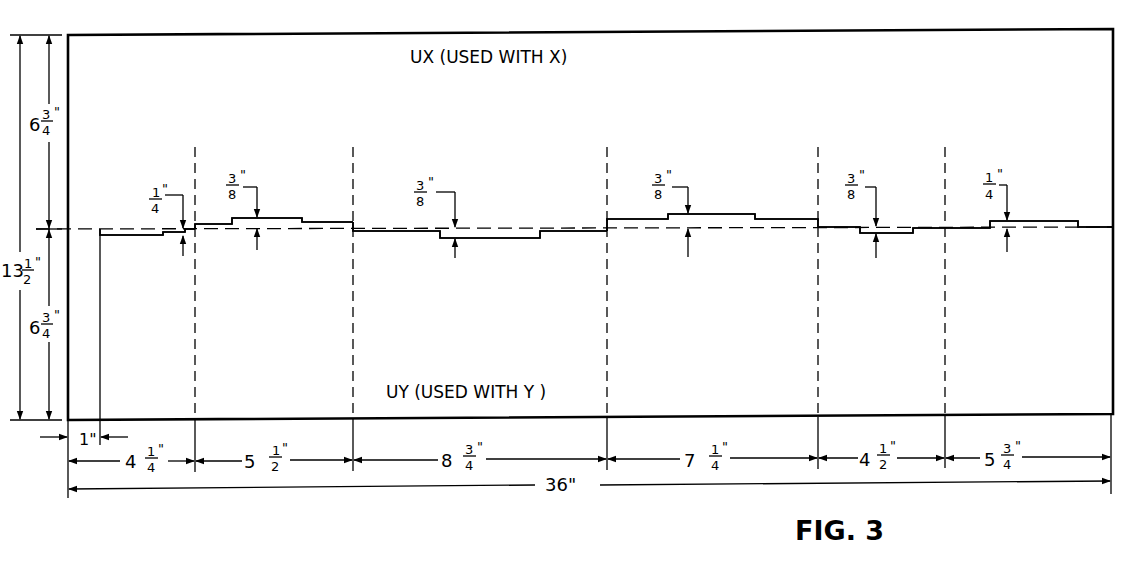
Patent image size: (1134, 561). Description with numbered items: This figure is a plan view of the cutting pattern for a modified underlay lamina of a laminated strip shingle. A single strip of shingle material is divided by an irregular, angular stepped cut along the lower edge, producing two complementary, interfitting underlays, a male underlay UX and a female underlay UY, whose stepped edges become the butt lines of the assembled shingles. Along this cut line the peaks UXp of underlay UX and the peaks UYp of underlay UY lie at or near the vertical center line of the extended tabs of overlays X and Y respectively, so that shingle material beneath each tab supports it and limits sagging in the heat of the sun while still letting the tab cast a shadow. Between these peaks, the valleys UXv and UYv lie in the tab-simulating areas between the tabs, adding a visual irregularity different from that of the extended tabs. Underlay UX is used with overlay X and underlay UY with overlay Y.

The peak of underlay UX UXp is at (132, 233).
The valley of underlay UX UXv is at (277, 217).
The valley of underlay UY UYv is at (142, 236).
The peak of underlay UY UYp is at (290, 223).